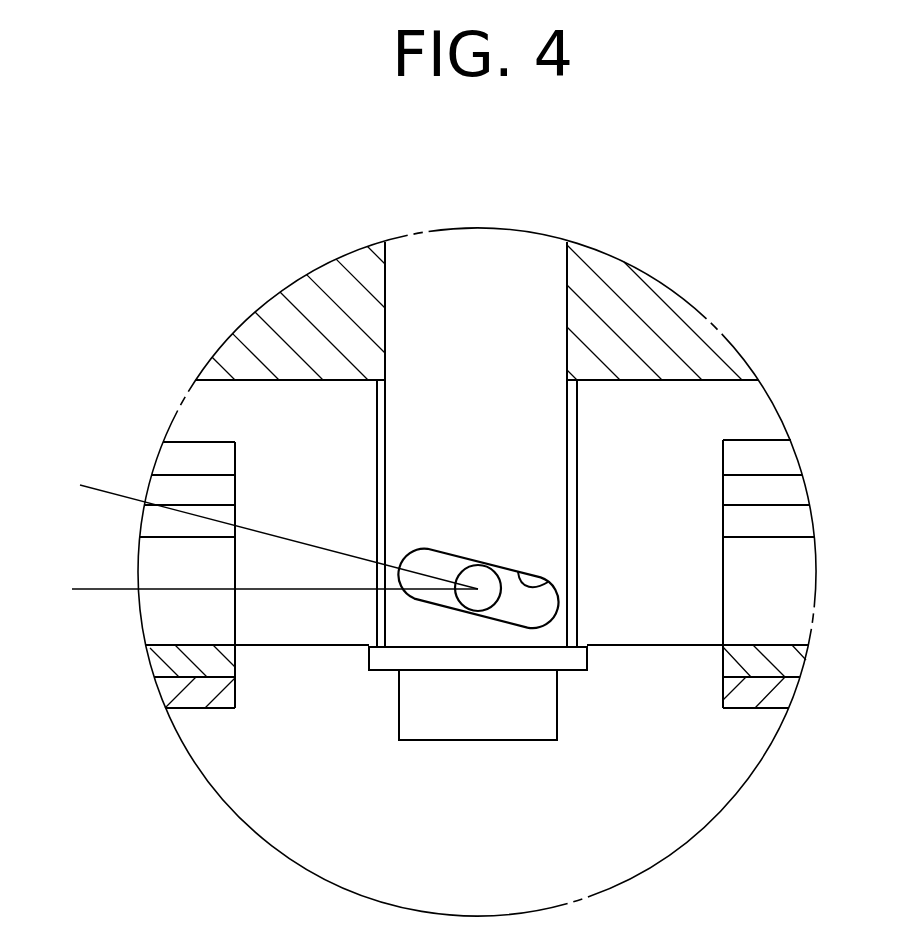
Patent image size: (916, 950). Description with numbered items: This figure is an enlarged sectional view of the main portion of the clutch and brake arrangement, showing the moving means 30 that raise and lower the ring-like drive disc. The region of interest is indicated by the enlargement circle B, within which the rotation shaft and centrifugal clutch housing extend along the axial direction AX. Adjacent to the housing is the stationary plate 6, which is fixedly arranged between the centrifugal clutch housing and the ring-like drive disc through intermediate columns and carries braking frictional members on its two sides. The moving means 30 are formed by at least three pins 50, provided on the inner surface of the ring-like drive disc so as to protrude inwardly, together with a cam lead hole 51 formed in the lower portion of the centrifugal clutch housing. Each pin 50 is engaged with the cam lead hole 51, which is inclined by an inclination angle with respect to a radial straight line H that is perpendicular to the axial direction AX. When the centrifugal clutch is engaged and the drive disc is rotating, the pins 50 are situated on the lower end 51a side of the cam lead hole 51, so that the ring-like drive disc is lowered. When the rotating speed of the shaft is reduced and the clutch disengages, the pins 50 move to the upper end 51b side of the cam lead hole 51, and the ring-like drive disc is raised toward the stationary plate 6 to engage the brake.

The bearing body B is at (633, 270).
The axial direction AX is at (473, 337).
The stationary plate 6 is at (788, 490).
The moving means 30 is at (432, 611).
The pin 50 is at (619, 589).
The cam lead hole 51 is at (619, 507).
The lower end 51a is at (549, 610).
The upper end 51b is at (423, 548).
The radial straight line H is at (280, 590).